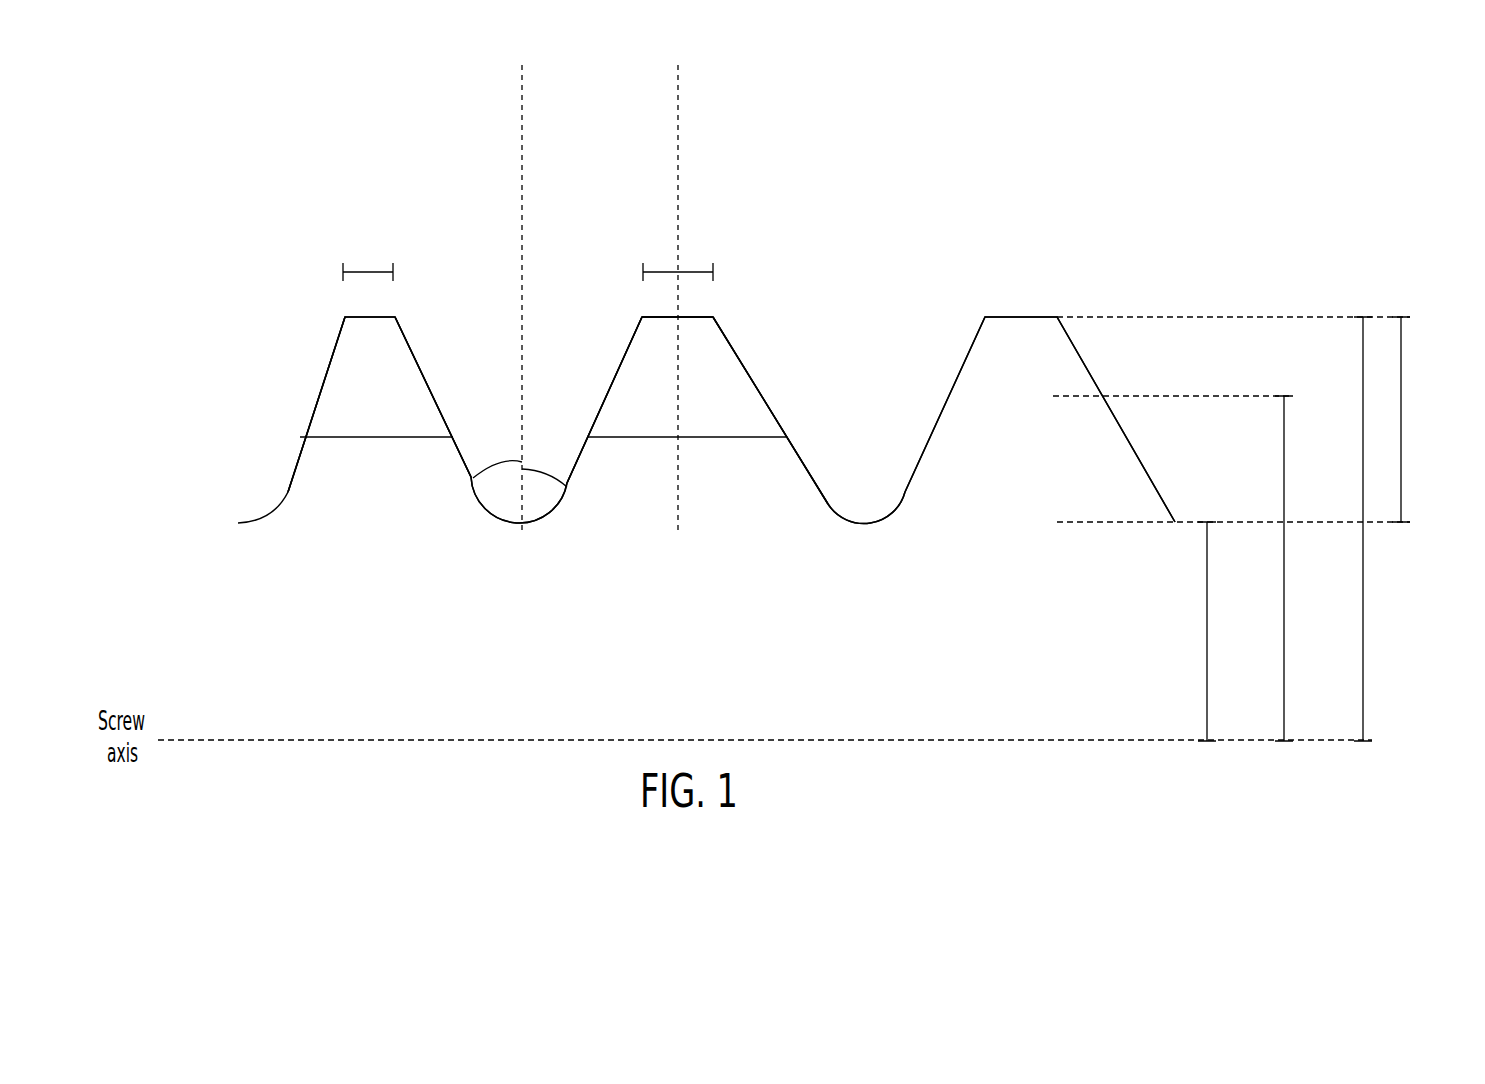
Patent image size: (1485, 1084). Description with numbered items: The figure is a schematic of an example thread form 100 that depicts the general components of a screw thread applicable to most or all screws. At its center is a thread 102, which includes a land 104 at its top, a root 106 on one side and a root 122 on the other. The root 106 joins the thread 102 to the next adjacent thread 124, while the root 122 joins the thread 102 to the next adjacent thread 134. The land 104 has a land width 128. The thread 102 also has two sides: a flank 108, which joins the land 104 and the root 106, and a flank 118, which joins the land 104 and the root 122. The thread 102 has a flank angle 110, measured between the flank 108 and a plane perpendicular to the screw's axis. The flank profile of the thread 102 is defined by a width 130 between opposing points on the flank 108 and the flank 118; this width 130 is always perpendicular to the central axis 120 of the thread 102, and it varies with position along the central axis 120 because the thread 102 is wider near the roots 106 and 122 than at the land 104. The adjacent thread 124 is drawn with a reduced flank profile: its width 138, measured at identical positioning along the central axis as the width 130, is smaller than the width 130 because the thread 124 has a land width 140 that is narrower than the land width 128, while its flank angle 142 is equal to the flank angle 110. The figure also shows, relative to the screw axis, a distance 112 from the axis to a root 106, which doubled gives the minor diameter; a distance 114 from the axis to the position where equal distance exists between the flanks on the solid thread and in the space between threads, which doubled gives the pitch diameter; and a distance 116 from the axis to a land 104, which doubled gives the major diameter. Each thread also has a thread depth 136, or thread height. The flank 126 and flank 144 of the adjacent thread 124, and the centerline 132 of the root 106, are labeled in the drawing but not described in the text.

The thread form 100 is at (270, 143).
The thread 102 is at (778, 264).
The land 104 is at (707, 317).
The root 106 is at (537, 525).
The flank 108 is at (620, 368).
The flank angle 110 is at (540, 470).
The distance between screw axis and root 112 is at (1207, 621).
The distance between screw axis and pitch position 114 is at (1284, 581).
The distance between screw axis and land 116 is at (1363, 658).
The flank 118 is at (767, 400).
The central axis 120 is at (677, 132).
The root 122 is at (868, 525).
The adjacent thread 124 is at (272, 332).
The trailing flank of adjacent thread 126 is at (417, 358).
The land width 128 is at (660, 270).
The width 130 is at (635, 438).
The root centerline 132 is at (520, 130).
The adjacent thread 134 is at (955, 345).
The thread depth 136 is at (1401, 425).
The width 138 is at (363, 437).
The land width 140 is at (360, 270).
The flank angle 142 is at (497, 463).
The leading flank of adjacent thread 144 is at (318, 378).